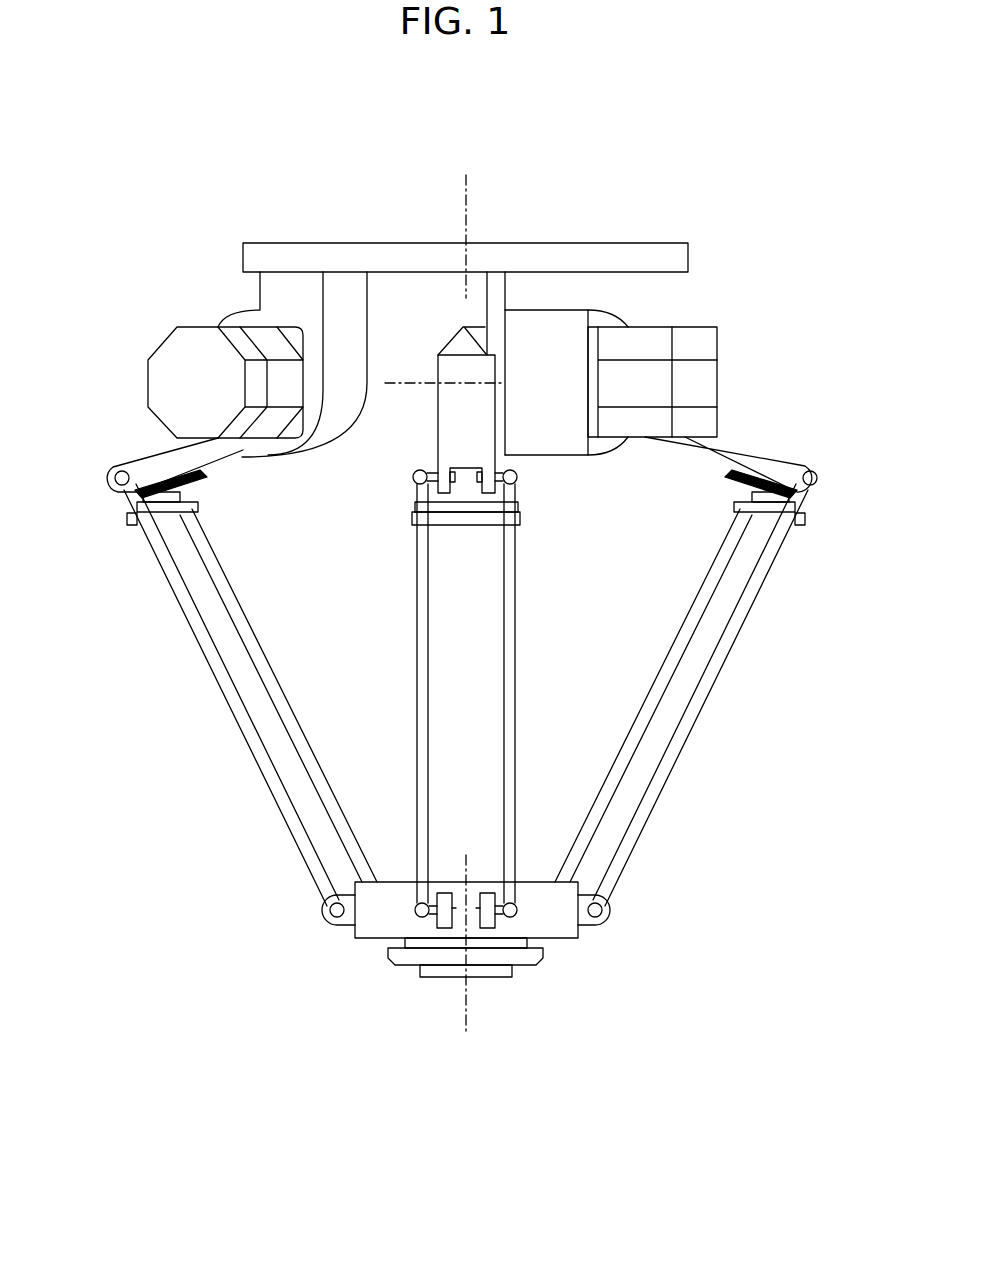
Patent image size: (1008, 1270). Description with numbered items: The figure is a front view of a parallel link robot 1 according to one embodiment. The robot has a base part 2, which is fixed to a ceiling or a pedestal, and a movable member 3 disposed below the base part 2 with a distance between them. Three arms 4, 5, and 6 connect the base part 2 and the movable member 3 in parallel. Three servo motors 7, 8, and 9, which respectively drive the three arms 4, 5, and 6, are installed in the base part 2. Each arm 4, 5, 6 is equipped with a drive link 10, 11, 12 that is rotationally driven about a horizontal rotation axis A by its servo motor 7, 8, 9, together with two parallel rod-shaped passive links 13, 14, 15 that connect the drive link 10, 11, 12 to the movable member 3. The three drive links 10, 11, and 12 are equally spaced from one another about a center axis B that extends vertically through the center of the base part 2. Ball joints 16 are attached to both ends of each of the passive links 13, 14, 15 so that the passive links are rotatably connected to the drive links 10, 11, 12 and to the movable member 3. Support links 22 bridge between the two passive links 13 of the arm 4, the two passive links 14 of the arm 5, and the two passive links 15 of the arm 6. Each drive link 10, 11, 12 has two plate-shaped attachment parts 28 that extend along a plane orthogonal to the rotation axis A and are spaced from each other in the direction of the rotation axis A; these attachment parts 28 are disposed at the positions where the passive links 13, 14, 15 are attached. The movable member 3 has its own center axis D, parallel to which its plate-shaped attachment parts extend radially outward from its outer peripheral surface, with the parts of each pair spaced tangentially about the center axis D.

The parallel link robot 1 is at (138, 150).
The base part 2 is at (342, 231).
The movable member 3 is at (405, 982).
The arm 4 is at (208, 695).
The arm 5 is at (462, 693).
The arm 6 is at (701, 695).
The servo motor 7 is at (178, 355).
The servo motor 8 is at (458, 337).
The servo motor 9 is at (690, 335).
The drive link 10 is at (143, 436).
The drive link 11 is at (428, 421).
The drive link 12 is at (754, 430).
The passive link 13 is at (262, 660).
The passive link 14 is at (418, 712).
The passive link 15 is at (690, 636).
The ball joint 16 is at (114, 480).
The support link 22 is at (200, 515).
The attachment part 28 is at (128, 470).
The rotation axis A is at (410, 383).
The center axis B is at (470, 207).
The center axis D is at (470, 1012).